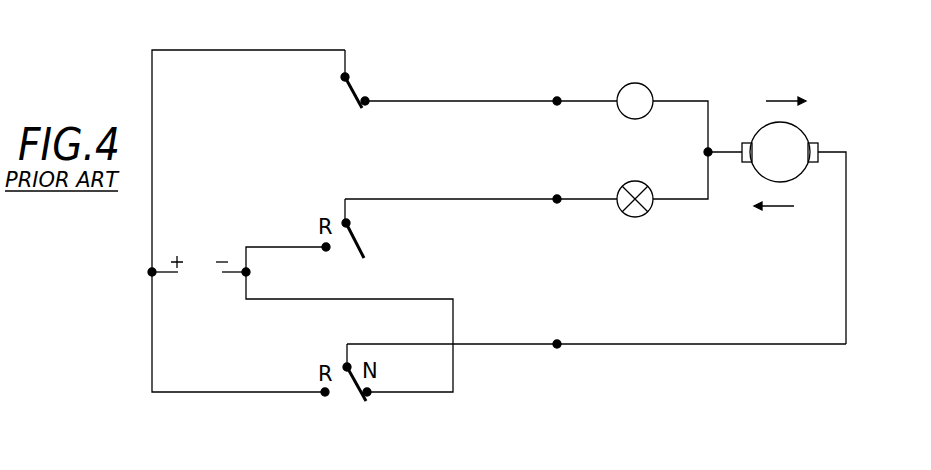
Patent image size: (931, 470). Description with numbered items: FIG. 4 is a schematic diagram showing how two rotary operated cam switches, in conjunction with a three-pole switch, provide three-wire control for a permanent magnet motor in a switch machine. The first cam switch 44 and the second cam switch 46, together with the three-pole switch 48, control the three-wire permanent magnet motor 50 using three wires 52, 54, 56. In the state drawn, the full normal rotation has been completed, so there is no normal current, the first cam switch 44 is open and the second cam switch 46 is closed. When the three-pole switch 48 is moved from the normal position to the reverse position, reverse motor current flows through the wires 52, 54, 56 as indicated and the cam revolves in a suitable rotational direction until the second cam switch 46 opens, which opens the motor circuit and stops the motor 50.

The cam switch (CSw1) 44 is at (635, 120).
The cam switch (CSw2) 46 is at (635, 218).
The three-pole switch (SW1) 48 is at (336, 110).
The permanent magnet motor (M) 50 is at (804, 131).
The wire 52 is at (557, 99).
The wire 54 is at (557, 197).
The wire 56 is at (557, 342).